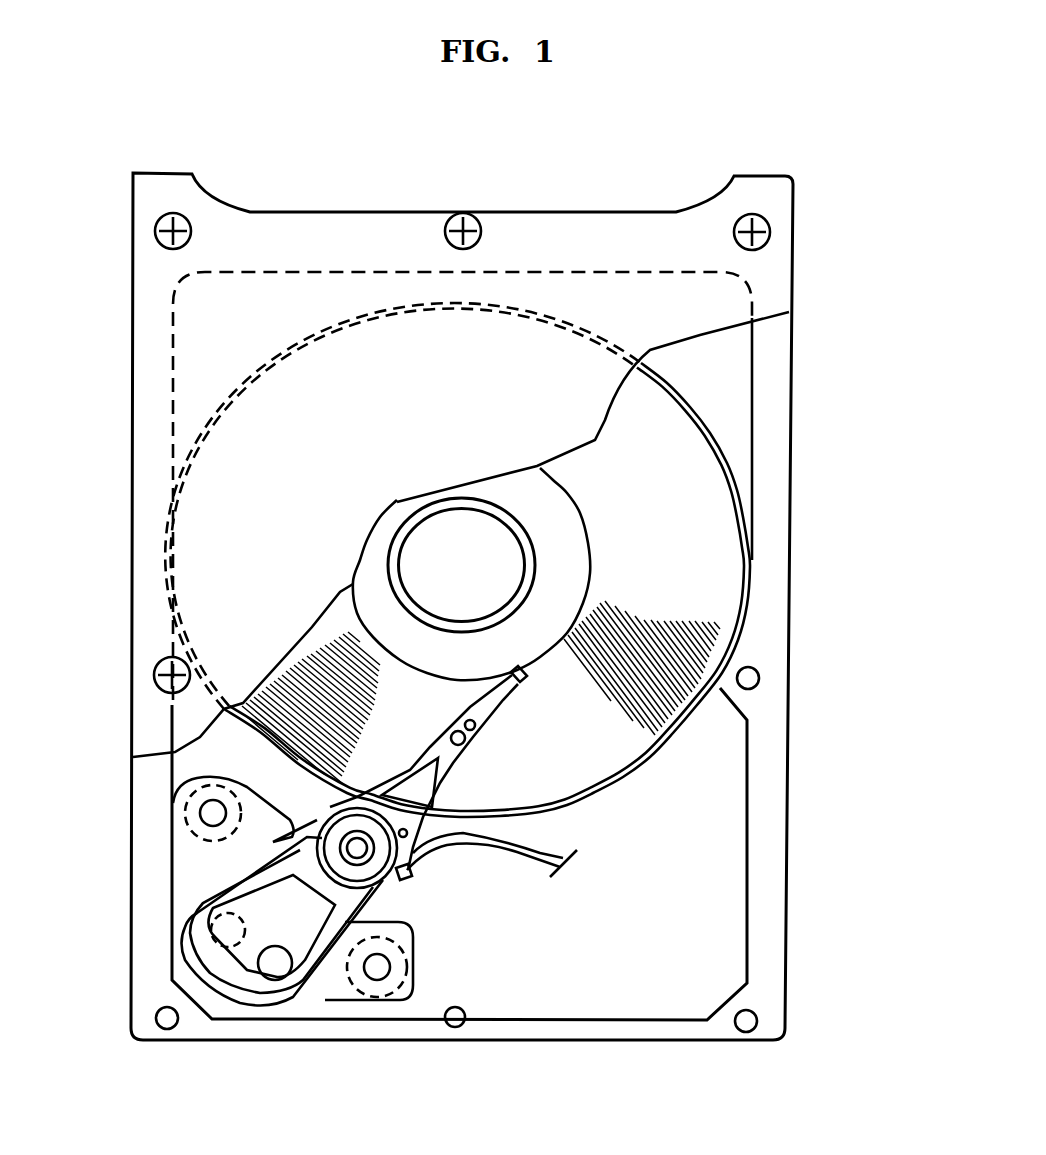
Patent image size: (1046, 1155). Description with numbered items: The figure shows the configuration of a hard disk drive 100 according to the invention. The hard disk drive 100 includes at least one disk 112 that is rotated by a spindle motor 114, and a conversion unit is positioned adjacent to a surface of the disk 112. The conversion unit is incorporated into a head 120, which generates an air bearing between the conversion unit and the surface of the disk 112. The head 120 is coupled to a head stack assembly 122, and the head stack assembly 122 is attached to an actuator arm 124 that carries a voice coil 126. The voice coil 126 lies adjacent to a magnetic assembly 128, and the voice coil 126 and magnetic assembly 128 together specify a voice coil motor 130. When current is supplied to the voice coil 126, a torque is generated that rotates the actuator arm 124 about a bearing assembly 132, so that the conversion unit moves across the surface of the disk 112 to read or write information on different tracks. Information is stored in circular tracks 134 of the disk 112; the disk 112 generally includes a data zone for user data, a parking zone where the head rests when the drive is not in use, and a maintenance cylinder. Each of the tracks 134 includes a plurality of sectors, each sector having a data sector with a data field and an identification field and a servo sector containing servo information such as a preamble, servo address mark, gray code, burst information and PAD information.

The hard disk drive 100 is at (848, 202).
The disk 112 is at (703, 509).
The spindle motor 114 is at (437, 543).
The head 120 is at (524, 683).
The head stack assembly 122 is at (482, 715).
The actuator arm 124 is at (270, 863).
The voice coil 126 is at (197, 922).
The magnetic assembly 128 is at (213, 872).
The voice coil motor 130 is at (333, 988).
The bearing assembly 132 is at (372, 860).
The tracks 134 is at (318, 650).